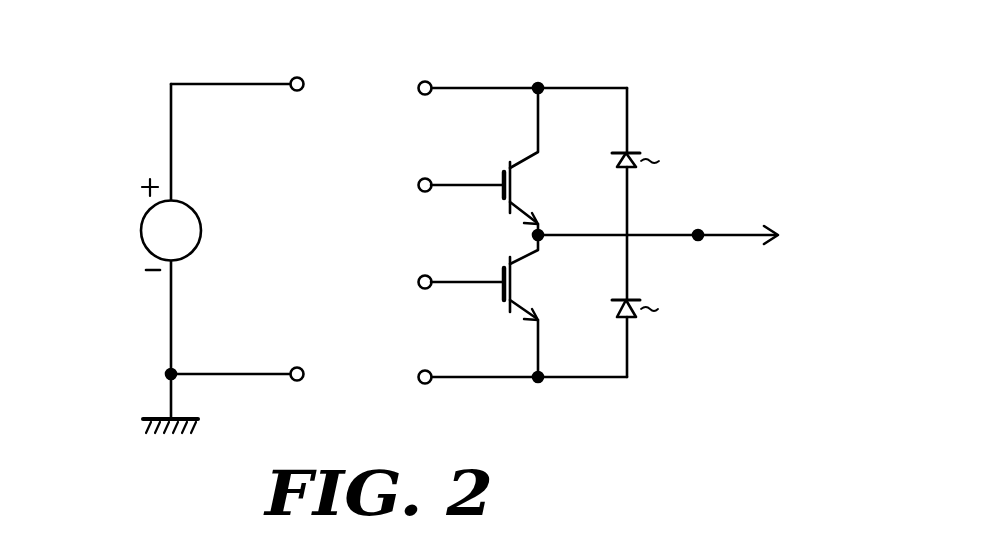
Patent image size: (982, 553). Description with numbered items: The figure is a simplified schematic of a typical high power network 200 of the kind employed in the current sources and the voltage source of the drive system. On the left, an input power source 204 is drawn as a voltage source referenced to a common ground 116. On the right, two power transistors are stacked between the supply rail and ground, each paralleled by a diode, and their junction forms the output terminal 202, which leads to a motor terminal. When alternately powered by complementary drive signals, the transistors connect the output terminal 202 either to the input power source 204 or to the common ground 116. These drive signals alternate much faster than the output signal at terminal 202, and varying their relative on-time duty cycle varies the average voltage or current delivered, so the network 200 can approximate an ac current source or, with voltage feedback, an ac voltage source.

The high power network 200 is at (592, 50).
The output terminal 202 is at (698, 232).
The input power source 204 is at (141, 232).
The common ground 116 is at (155, 417).